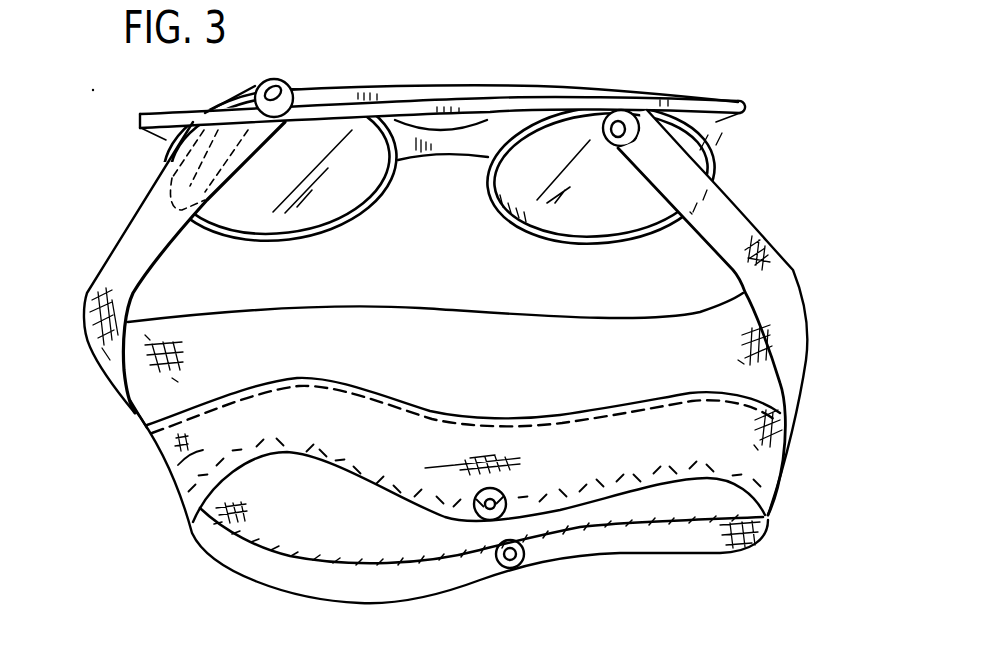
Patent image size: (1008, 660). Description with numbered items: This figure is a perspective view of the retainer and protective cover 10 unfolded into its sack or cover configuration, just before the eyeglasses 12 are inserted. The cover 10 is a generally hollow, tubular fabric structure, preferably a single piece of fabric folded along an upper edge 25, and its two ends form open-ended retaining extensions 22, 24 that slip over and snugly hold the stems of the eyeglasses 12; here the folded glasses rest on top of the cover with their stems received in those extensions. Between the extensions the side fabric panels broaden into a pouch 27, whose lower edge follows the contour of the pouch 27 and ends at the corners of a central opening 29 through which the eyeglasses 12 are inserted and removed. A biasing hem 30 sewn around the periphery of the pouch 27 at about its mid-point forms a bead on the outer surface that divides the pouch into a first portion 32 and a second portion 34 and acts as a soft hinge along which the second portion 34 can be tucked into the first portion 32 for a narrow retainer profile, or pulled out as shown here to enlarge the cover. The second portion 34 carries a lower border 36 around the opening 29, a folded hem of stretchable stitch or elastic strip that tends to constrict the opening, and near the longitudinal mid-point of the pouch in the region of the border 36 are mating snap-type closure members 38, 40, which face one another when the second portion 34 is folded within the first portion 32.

The retainer and protective cover 10 is at (808, 258).
The eyeglasses 12 is at (545, 58).
The retaining extension 22 is at (723, 215).
The retaining extension 24 is at (118, 270).
The upper edge 25 is at (358, 303).
The pouch 27 is at (760, 382).
The central opening 29 is at (383, 542).
The biasing hem 30 is at (430, 408).
The first portion 32 is at (157, 392).
The second portion 34 is at (175, 467).
The lower border 36 is at (717, 525).
The closure member 38 is at (490, 511).
The closure member 40 is at (521, 562).